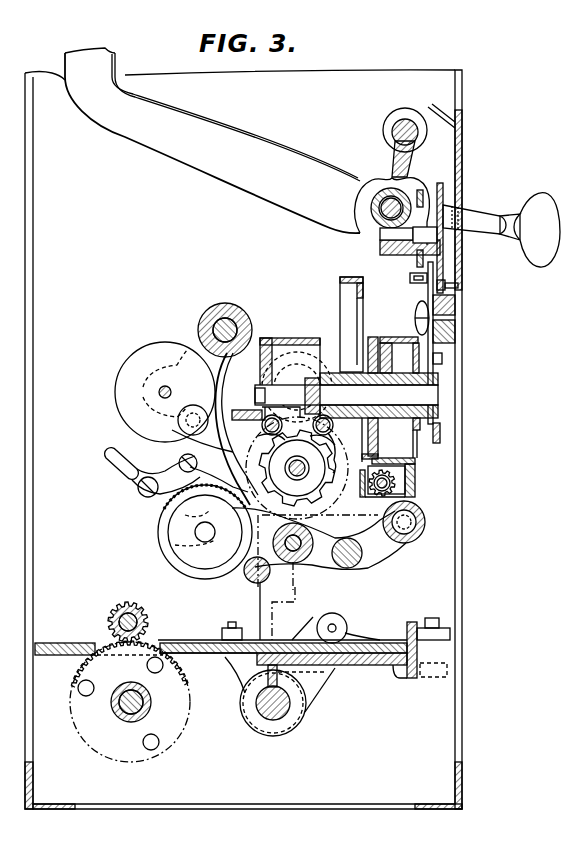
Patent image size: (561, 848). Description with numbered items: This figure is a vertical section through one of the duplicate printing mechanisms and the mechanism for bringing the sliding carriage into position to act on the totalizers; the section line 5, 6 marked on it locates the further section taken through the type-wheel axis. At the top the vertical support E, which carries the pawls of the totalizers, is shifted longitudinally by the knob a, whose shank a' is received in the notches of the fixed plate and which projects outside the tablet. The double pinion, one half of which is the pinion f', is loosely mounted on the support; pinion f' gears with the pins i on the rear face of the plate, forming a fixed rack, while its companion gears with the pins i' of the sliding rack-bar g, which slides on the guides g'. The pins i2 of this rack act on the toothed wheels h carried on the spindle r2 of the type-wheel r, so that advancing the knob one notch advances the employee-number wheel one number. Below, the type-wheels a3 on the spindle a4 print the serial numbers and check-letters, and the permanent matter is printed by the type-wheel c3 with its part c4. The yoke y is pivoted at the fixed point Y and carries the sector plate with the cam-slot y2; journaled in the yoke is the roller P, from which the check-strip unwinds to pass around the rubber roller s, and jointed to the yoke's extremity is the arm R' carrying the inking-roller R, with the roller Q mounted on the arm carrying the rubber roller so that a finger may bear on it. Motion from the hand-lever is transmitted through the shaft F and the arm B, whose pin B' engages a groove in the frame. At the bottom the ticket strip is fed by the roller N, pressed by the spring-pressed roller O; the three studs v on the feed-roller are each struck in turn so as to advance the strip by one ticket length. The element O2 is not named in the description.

The section line 5 is at (290, 140).
The section line 6 is at (270, 765).
The vertical support E is at (212, 140).
The stud O2 is at (392, 132).
The pinion f' is at (464, 227).
The shank a' is at (471, 219).
The knob a is at (530, 230).
The pins i' is at (408, 271).
The pins i is at (464, 285).
The sliding rack-bar g is at (406, 343).
The guides g' is at (466, 319).
The pins i2 is at (443, 359).
The toothed wheels h is at (441, 436).
The type-wheel r is at (345, 302).
The spindle r2 is at (346, 377).
The type-wheel c3 is at (412, 473).
The part c4 is at (410, 487).
The inking-roller R is at (411, 529).
The rubber roller s is at (319, 548).
The arm R' is at (385, 565).
The roller Q is at (252, 582).
The cam-slot y2 is at (237, 317).
The fixed point Y is at (215, 384).
The roller P is at (145, 553).
The yoke y is at (178, 445).
The spindle a4 is at (288, 470).
The type-wheels a3 is at (284, 449).
The pin B' is at (336, 620).
The arm B is at (242, 665).
The shaft F is at (264, 714).
The spring-pressed roller O is at (146, 613).
The feed-roller N is at (130, 701).
The studs v is at (121, 703).